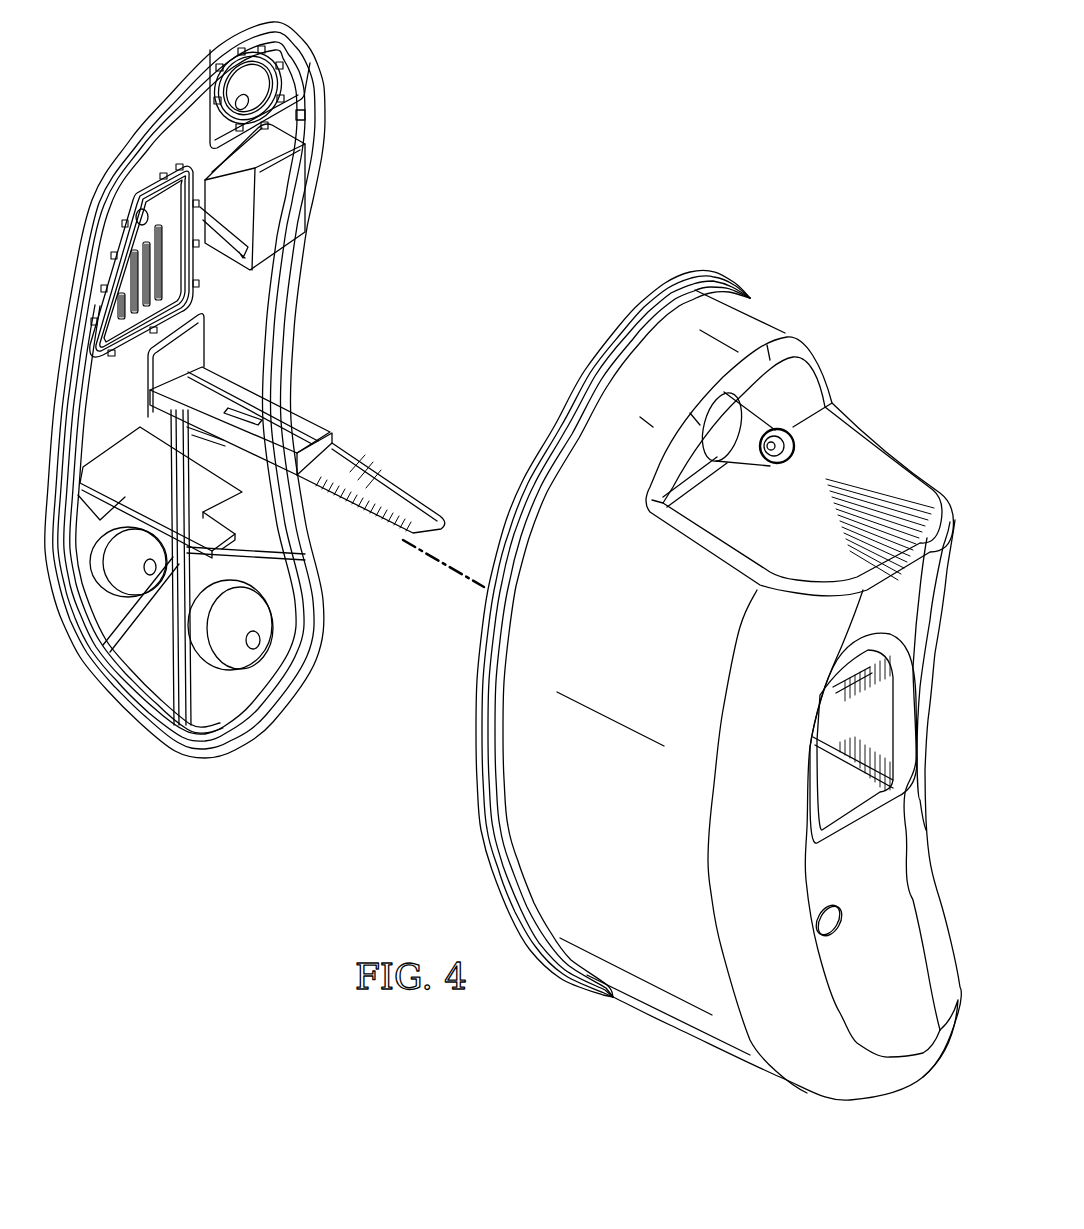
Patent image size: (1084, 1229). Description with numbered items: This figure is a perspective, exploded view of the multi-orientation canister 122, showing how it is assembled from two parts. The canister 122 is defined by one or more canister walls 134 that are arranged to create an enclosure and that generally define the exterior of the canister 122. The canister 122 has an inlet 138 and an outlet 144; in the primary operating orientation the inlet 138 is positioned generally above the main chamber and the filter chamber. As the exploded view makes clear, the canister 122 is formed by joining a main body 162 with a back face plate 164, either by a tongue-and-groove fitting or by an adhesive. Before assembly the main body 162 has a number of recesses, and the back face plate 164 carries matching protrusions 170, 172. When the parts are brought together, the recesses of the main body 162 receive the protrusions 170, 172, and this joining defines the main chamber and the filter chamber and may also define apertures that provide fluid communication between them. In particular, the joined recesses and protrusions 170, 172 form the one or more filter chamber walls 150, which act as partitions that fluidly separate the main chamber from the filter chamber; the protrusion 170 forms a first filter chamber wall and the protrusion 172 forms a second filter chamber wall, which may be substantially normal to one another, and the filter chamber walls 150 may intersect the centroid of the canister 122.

The canister 122 is at (683, 118).
The canister walls 134 is at (215, 60).
The inlet 138 is at (780, 456).
The outlet 144 is at (150, 183).
The filter chamber walls 150 is at (215, 243).
The main body 162 is at (697, 1038).
The back face plate 164 is at (322, 83).
The protrusion 170 is at (237, 232).
The protrusion 172 is at (167, 501).